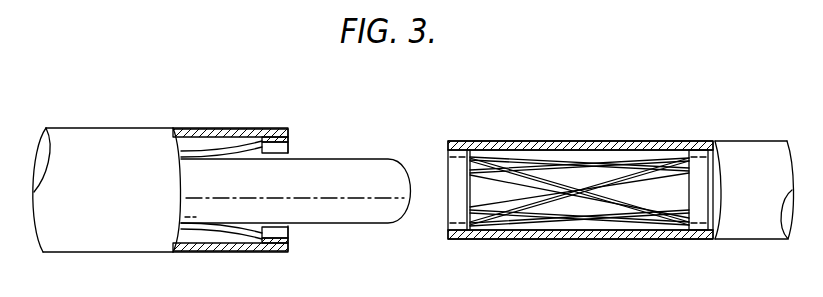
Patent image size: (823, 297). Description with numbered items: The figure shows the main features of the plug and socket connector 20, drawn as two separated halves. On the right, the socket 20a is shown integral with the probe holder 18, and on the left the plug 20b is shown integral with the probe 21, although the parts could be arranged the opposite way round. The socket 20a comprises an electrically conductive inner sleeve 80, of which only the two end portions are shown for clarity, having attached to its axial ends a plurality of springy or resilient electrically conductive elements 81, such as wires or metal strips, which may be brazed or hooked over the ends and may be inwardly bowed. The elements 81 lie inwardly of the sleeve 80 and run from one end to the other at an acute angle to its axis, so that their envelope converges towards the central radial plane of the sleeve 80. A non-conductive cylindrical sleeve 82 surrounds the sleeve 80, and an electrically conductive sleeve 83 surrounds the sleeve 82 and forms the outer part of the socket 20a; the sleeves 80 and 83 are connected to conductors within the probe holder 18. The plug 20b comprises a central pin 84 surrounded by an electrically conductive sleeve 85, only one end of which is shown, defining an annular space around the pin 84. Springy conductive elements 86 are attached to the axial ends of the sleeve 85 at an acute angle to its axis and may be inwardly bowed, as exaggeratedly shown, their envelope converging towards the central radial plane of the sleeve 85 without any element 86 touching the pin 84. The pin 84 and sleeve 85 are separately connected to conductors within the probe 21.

The probe holder 18 is at (745, 232).
The plug and socket connector 20 is at (439, 158).
The socket 20a is at (565, 137).
The plug 20b is at (191, 126).
The probe 21 is at (84, 243).
The inner sleeve 80 is at (448, 161).
The springy electrically conductive elements 81 is at (505, 155).
The non-conductive cylindrical sleeve 82 is at (598, 240).
The electrically conductive sleeve 83 is at (622, 142).
The central pin 84 is at (357, 214).
The electrically conductive sleeve 85 is at (288, 137).
The springy electrically conductive elements 86 is at (222, 138).